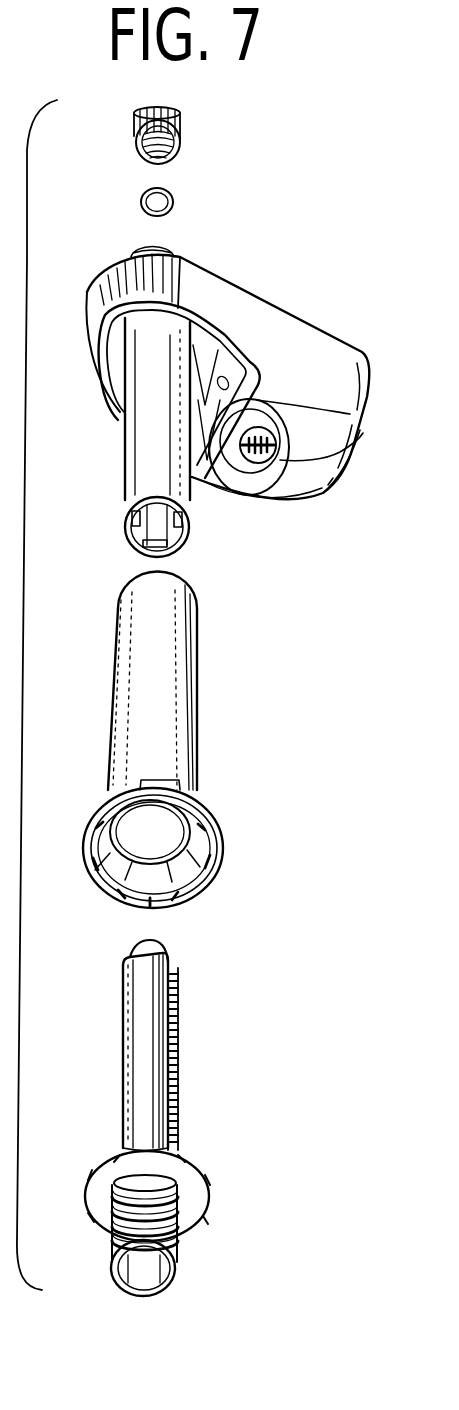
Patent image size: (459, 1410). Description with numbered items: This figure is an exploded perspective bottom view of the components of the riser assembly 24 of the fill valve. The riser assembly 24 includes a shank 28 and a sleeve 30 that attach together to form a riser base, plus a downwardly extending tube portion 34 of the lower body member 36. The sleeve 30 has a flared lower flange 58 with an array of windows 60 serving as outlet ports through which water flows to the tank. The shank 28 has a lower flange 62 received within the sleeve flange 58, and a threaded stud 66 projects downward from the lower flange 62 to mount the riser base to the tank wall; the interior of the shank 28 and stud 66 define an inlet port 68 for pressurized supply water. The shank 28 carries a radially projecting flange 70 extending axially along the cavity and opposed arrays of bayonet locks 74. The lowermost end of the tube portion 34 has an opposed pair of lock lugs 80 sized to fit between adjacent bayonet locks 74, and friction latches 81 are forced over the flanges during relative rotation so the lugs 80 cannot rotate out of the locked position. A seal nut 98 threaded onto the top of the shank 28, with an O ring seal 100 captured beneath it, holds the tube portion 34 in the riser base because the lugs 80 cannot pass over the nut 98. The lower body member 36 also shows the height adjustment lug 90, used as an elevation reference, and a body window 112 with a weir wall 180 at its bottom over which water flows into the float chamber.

The riser assembly 24 is at (305, 666).
The shank 28 is at (145, 1105).
The sleeve 30 is at (190, 727).
The tube portion 34 is at (148, 450).
The lower body member 36 is at (347, 433).
The flared lower flange 58 is at (220, 850).
The windows 60 is at (160, 900).
The lower flange 62 is at (190, 1193).
The threaded stud 66 is at (177, 1225).
The inlet port 68 is at (155, 1273).
The radially projecting flange 70 is at (130, 1008).
The bayonet locks 74 is at (178, 1028).
The lock lugs 80 is at (132, 525).
The friction latches 81 is at (147, 547).
The height adjustment lug 90 is at (338, 458).
The seal nut 98 is at (182, 122).
The O ring seal 100 is at (173, 203).
The body window 112 is at (212, 377).
The weir wall 180 is at (225, 387).